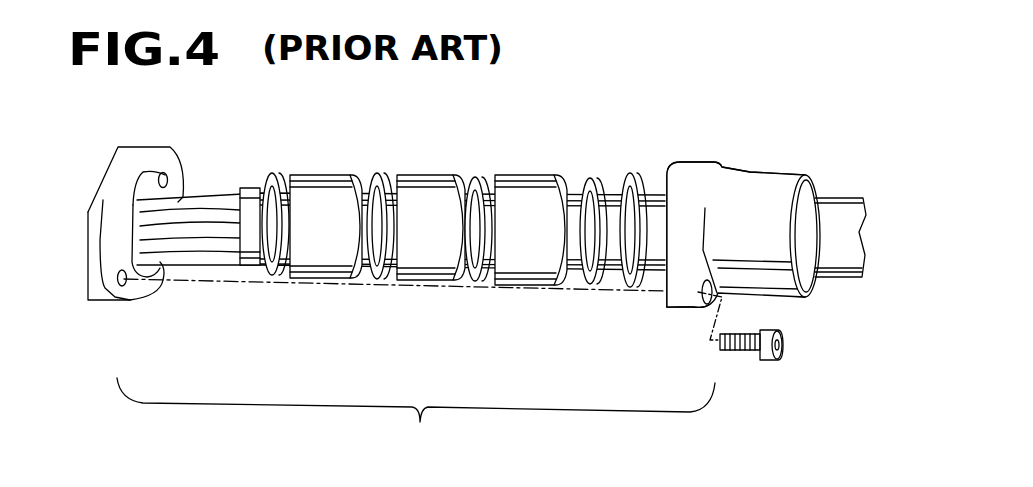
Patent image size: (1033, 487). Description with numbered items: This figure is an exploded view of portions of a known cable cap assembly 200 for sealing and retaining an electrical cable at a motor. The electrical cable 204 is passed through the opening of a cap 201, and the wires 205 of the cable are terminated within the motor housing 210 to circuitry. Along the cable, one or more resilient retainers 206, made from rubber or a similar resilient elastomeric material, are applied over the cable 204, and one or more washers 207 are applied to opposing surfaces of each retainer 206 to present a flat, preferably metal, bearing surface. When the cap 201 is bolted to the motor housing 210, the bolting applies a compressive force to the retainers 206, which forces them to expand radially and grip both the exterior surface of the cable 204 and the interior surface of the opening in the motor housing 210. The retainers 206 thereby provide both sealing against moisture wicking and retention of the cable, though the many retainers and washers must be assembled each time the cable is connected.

The cable cap assembly 200 is at (416, 416).
The cap 201 is at (745, 192).
The electrical cable 204 is at (813, 222).
The wires 205 is at (185, 207).
The resilient retainer 206 is at (530, 175).
The washer 207 is at (385, 176).
The motor housing 210 is at (103, 202).